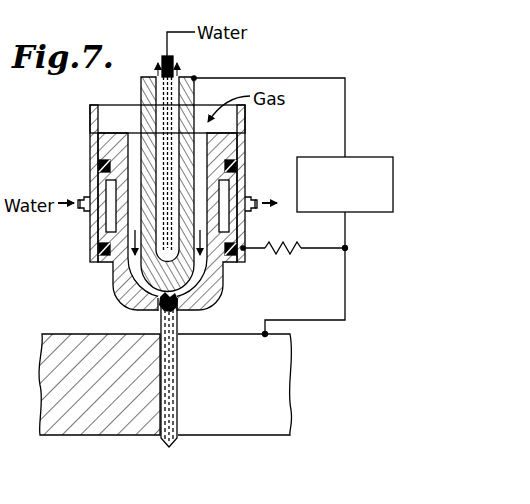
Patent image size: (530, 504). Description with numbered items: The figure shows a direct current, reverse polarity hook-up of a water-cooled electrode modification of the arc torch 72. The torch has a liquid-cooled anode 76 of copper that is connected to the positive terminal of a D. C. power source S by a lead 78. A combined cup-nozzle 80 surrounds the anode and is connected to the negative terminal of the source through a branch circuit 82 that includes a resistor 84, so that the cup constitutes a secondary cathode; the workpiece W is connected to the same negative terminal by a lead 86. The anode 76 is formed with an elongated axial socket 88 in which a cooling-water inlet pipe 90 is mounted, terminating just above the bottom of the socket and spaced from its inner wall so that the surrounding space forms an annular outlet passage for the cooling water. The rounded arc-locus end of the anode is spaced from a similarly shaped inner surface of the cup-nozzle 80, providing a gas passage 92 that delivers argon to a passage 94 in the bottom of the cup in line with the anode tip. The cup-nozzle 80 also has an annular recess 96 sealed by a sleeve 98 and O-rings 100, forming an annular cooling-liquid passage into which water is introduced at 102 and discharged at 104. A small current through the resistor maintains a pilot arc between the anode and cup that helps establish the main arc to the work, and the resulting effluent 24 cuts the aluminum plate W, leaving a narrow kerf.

The effluent 24 is at (178, 381).
The arc torch 72 is at (88, 120).
The liquid-cooled anode 76 is at (150, 90).
The lead 78 is at (309, 78).
The combined cup-nozzle 80 is at (218, 273).
The branch circuit 82 is at (322, 249).
The resistor 84 is at (282, 244).
The lead 86 is at (346, 283).
The elongated axial socket 88 is at (156, 118).
The cooling-water inlet pipe 90 is at (175, 58).
The gas passage 92 is at (143, 298).
The passage 94 is at (182, 301).
The annular recess 96 is at (112, 224).
The sleeve 98 is at (103, 167).
The O-rings 100 is at (104, 250).
The water inlet 102 is at (80, 197).
The water discharge 104 is at (251, 199).
The D. C. power source S is at (371, 157).
The workpiece W is at (118, 422).